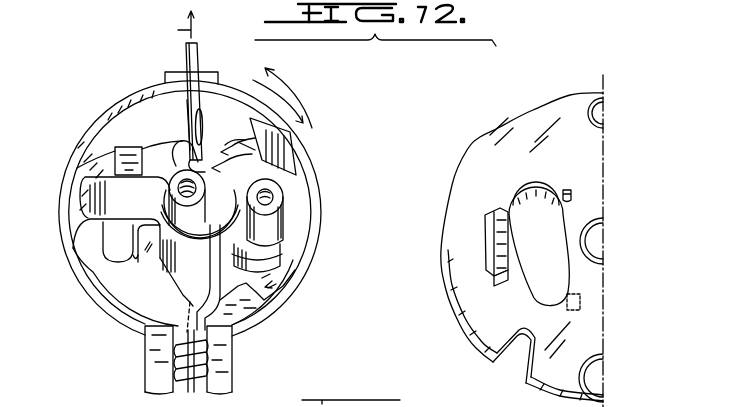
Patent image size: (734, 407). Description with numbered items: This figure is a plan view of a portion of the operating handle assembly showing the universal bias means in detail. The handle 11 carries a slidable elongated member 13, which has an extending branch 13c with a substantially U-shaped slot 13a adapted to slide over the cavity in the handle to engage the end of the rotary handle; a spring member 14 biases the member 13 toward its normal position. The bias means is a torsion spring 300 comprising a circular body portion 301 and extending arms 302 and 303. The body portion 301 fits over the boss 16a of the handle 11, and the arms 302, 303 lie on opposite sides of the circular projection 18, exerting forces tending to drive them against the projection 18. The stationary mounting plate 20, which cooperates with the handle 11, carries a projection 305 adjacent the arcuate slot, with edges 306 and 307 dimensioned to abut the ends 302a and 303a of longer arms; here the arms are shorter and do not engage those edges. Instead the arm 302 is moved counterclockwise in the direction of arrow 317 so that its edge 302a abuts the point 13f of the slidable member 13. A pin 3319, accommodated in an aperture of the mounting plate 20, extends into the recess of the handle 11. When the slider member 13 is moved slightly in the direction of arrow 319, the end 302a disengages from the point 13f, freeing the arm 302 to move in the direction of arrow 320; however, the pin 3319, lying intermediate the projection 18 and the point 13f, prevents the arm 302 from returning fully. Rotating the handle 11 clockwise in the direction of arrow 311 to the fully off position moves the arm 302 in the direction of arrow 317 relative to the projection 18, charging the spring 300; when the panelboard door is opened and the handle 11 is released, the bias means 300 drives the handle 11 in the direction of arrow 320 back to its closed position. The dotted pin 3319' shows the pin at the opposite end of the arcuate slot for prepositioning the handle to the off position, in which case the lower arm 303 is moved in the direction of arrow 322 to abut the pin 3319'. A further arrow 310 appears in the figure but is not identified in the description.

The handle 11 is at (90, 118).
The elongated member 13 is at (186, 55).
The U-shaped slot 13a is at (117, 250).
The extending branch 13c is at (118, 280).
The point of slidable member 13f is at (190, 118).
The spring member 14 is at (178, 360).
The boss 16a is at (165, 257).
The projection 18 is at (284, 201).
The stationary mounting plate 20 is at (466, 308).
The torsion spring 300 is at (157, 206).
The circular body portion 301 is at (255, 165).
The extending arm 302 is at (182, 148).
The end of arm 302a is at (201, 134).
The extending arm 303 is at (272, 260).
The end of arm 303a is at (270, 247).
The projection 305 is at (492, 237).
The edge 306 is at (500, 207).
The edge 307 is at (504, 270).
The rotation arrow 310 is at (305, 93).
The arrow 311 is at (277, 92).
The arrow 317 is at (228, 145).
The arrow 319 is at (186, 30).
The arrow 320 is at (270, 150).
The arrow 322 is at (284, 280).
The pin 3319 is at (570, 175).
The pin in alternate position 3319' is at (618, 304).